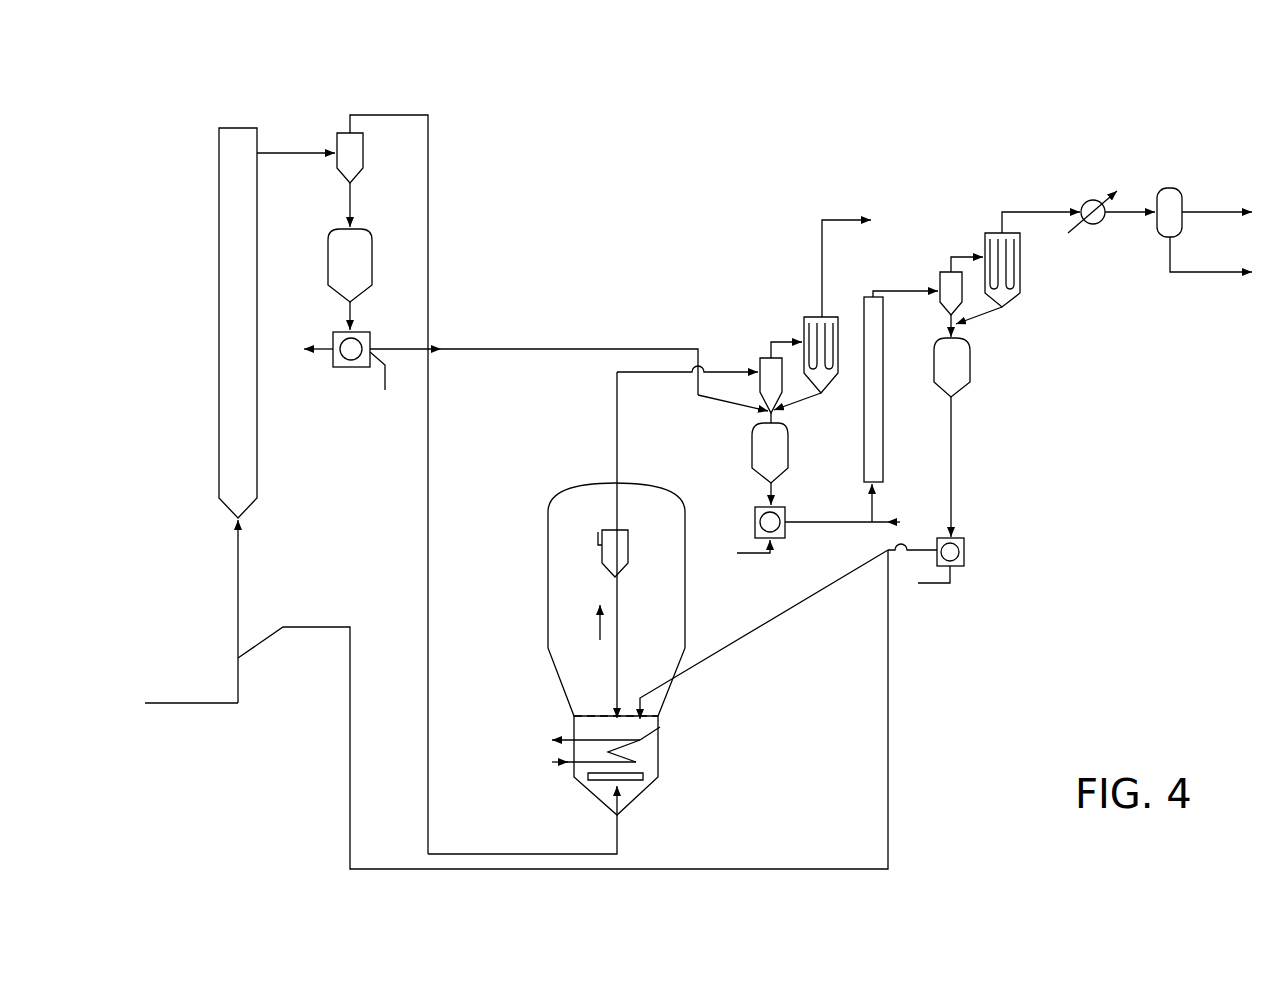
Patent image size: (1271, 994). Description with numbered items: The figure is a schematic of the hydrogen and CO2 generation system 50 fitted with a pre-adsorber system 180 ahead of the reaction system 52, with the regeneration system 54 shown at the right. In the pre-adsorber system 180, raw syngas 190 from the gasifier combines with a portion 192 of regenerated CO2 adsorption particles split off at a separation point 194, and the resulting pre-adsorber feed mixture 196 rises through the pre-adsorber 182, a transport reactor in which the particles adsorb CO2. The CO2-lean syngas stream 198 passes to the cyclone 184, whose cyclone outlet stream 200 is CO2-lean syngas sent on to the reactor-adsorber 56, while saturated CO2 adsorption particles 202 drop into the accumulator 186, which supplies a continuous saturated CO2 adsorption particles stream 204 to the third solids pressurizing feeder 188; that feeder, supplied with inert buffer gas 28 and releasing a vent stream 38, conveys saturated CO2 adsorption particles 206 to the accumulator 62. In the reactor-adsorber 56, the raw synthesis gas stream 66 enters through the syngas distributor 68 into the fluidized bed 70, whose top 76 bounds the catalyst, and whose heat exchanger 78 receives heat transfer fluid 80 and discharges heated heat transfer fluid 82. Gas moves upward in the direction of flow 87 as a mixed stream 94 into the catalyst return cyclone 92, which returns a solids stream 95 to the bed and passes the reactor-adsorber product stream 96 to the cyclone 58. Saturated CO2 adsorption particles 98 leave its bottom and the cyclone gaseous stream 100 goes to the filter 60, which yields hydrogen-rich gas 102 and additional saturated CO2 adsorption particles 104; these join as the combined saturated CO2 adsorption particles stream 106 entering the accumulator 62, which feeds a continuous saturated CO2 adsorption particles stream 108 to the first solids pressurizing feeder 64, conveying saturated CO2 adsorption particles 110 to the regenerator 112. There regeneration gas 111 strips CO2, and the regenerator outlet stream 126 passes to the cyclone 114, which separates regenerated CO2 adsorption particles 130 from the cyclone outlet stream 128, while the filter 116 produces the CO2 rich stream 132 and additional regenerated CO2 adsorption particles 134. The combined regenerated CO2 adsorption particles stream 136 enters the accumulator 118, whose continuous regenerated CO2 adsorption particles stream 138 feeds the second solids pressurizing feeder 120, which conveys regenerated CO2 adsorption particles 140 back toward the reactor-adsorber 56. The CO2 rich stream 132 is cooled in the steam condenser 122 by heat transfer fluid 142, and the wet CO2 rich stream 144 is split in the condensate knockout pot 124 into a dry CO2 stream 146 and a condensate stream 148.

The inert buffer gas 28 is at (385, 380).
The vent stream 38 is at (322, 352).
The hydrogen and CO2 generation system 50 is at (1072, 130).
The reaction system 52 is at (714, 270).
The regeneration system 54 is at (1100, 352).
The reactor-adsorber 56 is at (652, 488).
The cyclone 58 is at (760, 368).
The filter 60 is at (810, 317).
The accumulator 62 is at (752, 450).
The first solids pressurizing feeder 64 is at (785, 512).
The raw synthesis gas stream 66 is at (515, 853).
The syngas distributor 68 is at (630, 782).
The fluidized bed 70 is at (650, 750).
The top of the fluidized bed 76 is at (612, 724).
The heat exchanger 78 is at (660, 727).
The heat transfer fluid 80 is at (556, 768).
The heated heat transfer fluid 82 is at (572, 740).
The direction of flow 87 is at (598, 625).
The catalyst return cyclone 92 is at (628, 542).
The mixed stream 94 is at (596, 538).
The solids stream 95 is at (618, 648).
The reactor-adsorber product stream 96 is at (680, 375).
The saturated CO2 adsorption particles 98 is at (757, 402).
The cyclone gaseous stream 100 is at (782, 342).
The hydrogen-rich gas 102 is at (822, 265).
The additional saturated CO2 adsorption particles 104 is at (822, 395).
The combined saturated CO2 adsorption particles stream 106 is at (778, 425).
The continuous saturated CO2 adsorption particles stream 108 is at (765, 492).
The saturated CO2 adsorption particles 110 is at (830, 524).
The regeneration gas 111 is at (882, 520).
The regenerator 112 is at (884, 392).
The cyclone 114 is at (940, 282).
The filter 116 is at (990, 233).
The accumulator 118 is at (970, 365).
The second solids pressurizing feeder 120 is at (965, 555).
The steam condenser 122 is at (1088, 200).
The condensate knockout pot 124 is at (1172, 188).
The transfer line 126 is at (875, 291).
The cyclone outlet stream 128 is at (968, 257).
The regenerated CO2 adsorption particles 130 is at (948, 322).
The CO2 rich stream 132 is at (1050, 212).
The additional regenerated CO2 adsorption particles 134 is at (1005, 310).
The combined regenerated CO2 adsorption particles stream 136 is at (958, 330).
The continuous regenerated CO2 adsorption particles stream 138 is at (952, 470).
The regenerated CO2 adsorption particles 140 is at (758, 627).
The heat transfer fluid 142 is at (1079, 233).
The wet CO2 rich stream 144 is at (1128, 214).
The dry CO2 stream 146 is at (1212, 212).
The condensate stream 148 is at (1206, 273).
The pre-adsorber system 180 is at (457, 135).
The pre-adsorber 182 is at (219, 318).
The cyclone 184 is at (337, 135).
The accumulator 186 is at (328, 262).
The third solids pressurizing feeder 188 is at (333, 342).
The raw syngas 190 is at (198, 703).
The portion of the regenerated CO2 adsorption particles 192 is at (889, 733).
The separation point 194 is at (905, 548).
The pre-adsorber feed mixture 196 is at (238, 585).
The CO2-lean syngas stream 198 is at (296, 156).
The cyclone outlet stream 200 is at (428, 232).
The saturated CO2 adsorption particles 202 is at (352, 200).
The continuous saturated CO2 adsorption particles stream 204 is at (352, 310).
The saturated CO2 adsorption particles 206 is at (528, 349).